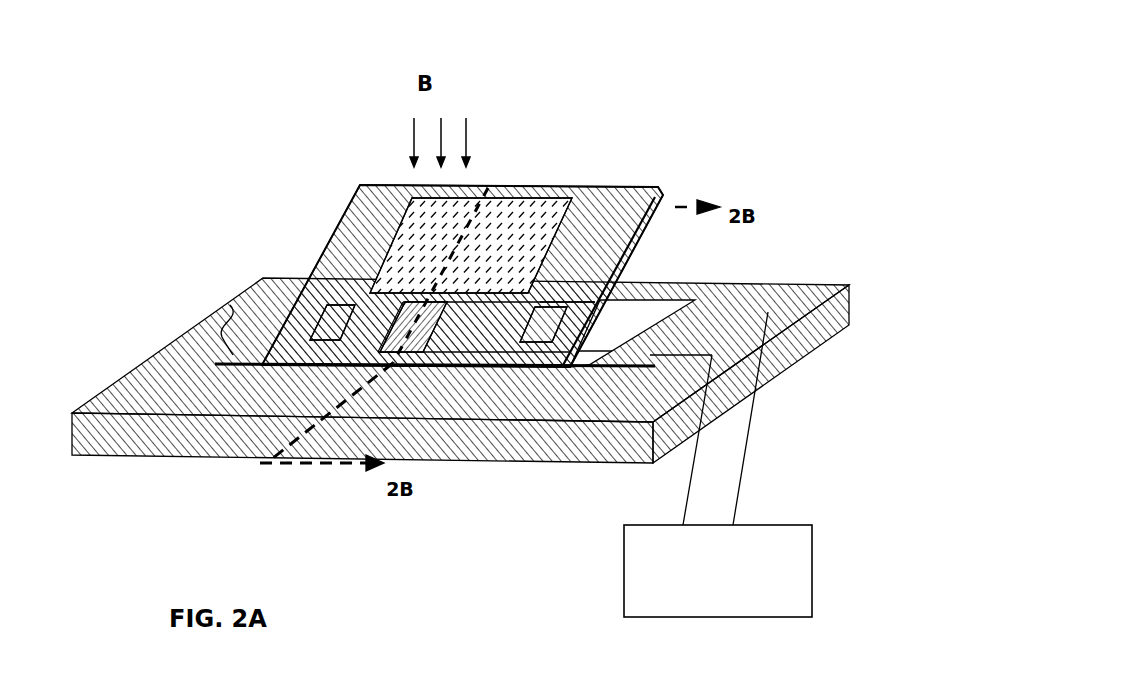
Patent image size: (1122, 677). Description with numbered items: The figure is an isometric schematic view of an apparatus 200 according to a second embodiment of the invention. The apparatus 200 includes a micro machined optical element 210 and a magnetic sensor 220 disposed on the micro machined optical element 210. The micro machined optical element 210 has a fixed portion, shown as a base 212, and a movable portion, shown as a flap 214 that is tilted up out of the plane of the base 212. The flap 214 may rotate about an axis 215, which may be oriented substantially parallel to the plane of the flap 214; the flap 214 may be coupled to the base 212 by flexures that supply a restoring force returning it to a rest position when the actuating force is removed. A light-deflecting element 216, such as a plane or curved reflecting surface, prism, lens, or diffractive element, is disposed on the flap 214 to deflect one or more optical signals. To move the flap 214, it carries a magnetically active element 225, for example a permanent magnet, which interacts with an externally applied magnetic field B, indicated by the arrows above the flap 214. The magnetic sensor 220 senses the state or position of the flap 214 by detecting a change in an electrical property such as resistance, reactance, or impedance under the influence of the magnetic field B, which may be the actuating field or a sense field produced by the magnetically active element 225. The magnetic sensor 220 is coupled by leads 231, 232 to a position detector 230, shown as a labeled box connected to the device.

The apparatus 200 is at (776, 58).
The micro machined optical element 210 is at (195, 98).
The base 212 is at (142, 363).
The flap 214 is at (337, 242).
The axis 215 is at (230, 305).
The light-deflecting element 216 is at (522, 207).
The magnetic sensor 220 is at (358, 293).
The magnetically active element 225 is at (322, 316).
The position detector 230 is at (624, 585).
The lead 231 is at (518, 341).
The lead 232 is at (548, 288).